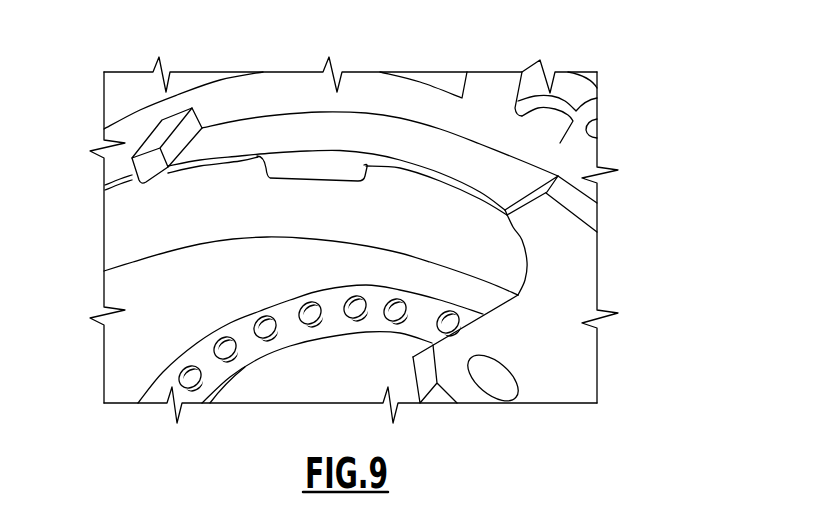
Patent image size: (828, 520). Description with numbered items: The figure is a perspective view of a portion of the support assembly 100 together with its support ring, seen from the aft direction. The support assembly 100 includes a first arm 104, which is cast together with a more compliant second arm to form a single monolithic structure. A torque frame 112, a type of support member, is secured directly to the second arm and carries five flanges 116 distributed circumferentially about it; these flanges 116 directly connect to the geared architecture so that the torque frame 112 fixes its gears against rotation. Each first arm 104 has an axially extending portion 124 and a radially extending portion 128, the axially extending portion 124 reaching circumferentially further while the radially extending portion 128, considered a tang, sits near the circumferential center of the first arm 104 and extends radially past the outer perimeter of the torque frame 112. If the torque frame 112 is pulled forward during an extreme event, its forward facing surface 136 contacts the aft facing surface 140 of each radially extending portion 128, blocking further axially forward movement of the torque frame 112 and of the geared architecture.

The support assembly 100 is at (577, 152).
The first arm 104 is at (427, 145).
The torque frame 112 is at (567, 262).
The flanges 116 is at (558, 392).
The axially extending portion 124 is at (340, 127).
The radially extending portion 128 is at (304, 165).
The forward facing surface 136 is at (262, 172).
The aft facing surface 140 is at (343, 322).